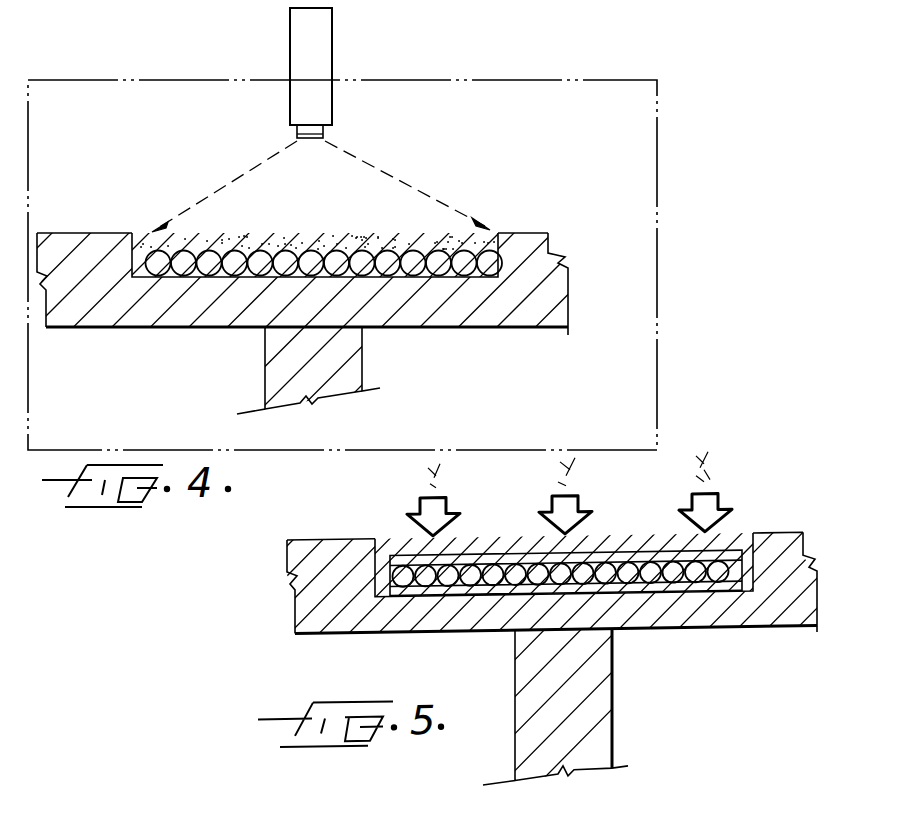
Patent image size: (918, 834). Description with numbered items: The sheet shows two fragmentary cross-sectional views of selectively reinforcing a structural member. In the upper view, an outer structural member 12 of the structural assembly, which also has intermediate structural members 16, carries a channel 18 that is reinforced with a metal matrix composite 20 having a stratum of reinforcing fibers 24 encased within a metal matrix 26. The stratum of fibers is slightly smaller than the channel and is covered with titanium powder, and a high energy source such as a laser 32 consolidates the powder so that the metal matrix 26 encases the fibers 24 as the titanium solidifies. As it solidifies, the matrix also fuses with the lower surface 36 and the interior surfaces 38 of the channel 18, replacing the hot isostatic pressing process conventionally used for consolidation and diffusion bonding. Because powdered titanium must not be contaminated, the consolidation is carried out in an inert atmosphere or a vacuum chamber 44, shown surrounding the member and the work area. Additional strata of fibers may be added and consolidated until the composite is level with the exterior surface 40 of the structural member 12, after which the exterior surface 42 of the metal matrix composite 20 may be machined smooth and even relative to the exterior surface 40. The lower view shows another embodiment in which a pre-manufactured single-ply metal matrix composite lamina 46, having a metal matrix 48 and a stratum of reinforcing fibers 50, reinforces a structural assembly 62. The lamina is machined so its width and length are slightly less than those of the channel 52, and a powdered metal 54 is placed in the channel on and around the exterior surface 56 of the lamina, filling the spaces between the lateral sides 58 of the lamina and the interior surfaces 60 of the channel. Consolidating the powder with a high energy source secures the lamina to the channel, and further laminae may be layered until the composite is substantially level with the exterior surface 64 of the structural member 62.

In FIG. 4, the outer structural member 12 is at (557, 302).
In FIG. 4, the intermediate structural member 16 is at (268, 372).
In FIG. 4, the channel 18 is at (204, 232).
In FIG. 4, the metal matrix composite 20 is at (352, 225).
In FIG. 4, the stratum of reinforcing fibers 24 is at (440, 268).
In FIG. 4, the metal matrix 26 is at (375, 232).
In FIG. 4, the laser 32 is at (332, 62).
In FIG. 4, the lower surface 36 is at (183, 283).
In FIG. 4, the interior surfaces 38 is at (107, 268).
In FIG. 4, the exterior surface 40 is at (88, 232).
In FIG. 4, the exterior surface 42 is at (284, 232).
In FIG. 4, the vacuum chamber 44 is at (657, 112).
In FIG. 5, the metal matrix composite lamina 46 is at (393, 545).
In FIG. 5, the metal matrix 48 is at (412, 565).
In FIG. 5, the stratum of reinforcing fibers 50 is at (625, 567).
In FIG. 5, the channel 52 is at (751, 538).
In FIG. 5, the powdered metal 54 is at (445, 476).
In FIG. 5, the exterior surface 56 is at (500, 545).
In FIG. 5, the lateral sides 58 is at (373, 587).
In FIG. 5, the interior surfaces 60 is at (300, 576).
In FIG. 5, the structural assembly 62 is at (812, 637).
In FIG. 5, the exterior surface 64 is at (803, 535).